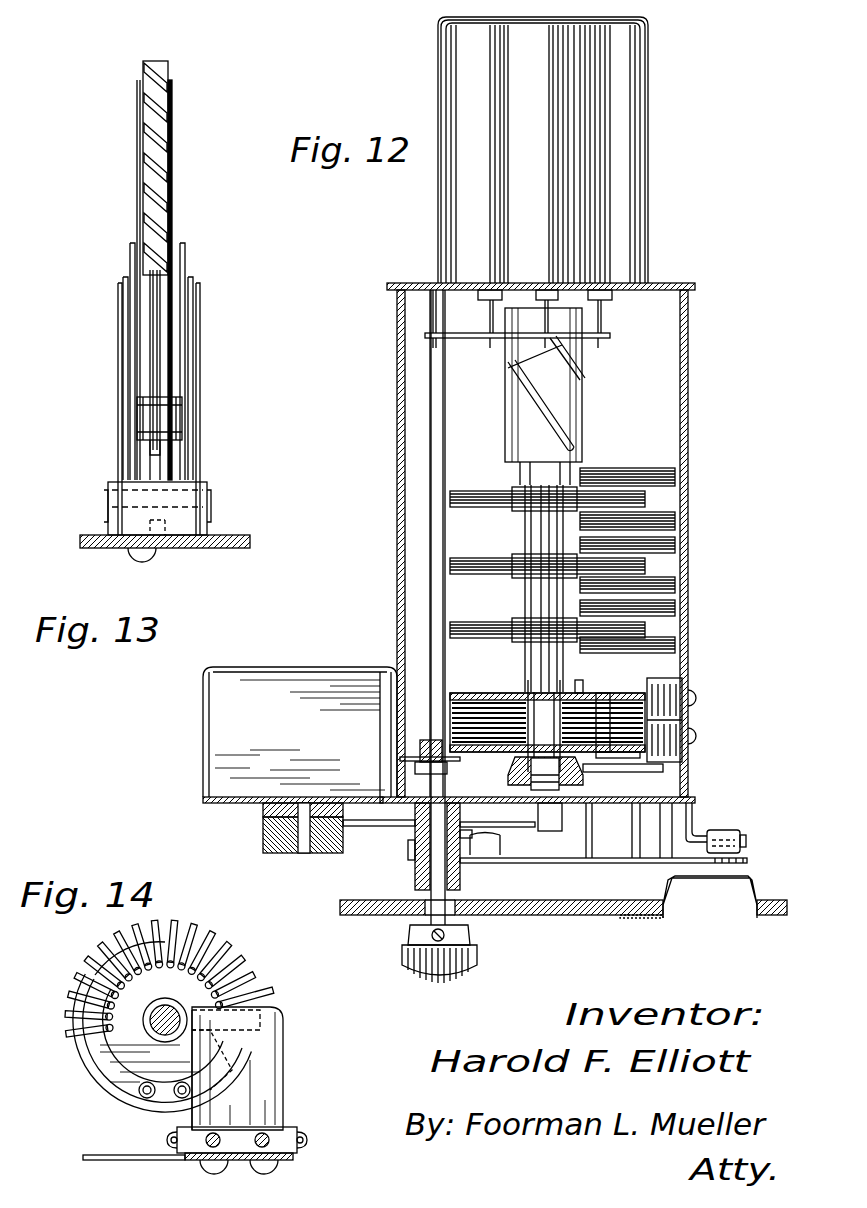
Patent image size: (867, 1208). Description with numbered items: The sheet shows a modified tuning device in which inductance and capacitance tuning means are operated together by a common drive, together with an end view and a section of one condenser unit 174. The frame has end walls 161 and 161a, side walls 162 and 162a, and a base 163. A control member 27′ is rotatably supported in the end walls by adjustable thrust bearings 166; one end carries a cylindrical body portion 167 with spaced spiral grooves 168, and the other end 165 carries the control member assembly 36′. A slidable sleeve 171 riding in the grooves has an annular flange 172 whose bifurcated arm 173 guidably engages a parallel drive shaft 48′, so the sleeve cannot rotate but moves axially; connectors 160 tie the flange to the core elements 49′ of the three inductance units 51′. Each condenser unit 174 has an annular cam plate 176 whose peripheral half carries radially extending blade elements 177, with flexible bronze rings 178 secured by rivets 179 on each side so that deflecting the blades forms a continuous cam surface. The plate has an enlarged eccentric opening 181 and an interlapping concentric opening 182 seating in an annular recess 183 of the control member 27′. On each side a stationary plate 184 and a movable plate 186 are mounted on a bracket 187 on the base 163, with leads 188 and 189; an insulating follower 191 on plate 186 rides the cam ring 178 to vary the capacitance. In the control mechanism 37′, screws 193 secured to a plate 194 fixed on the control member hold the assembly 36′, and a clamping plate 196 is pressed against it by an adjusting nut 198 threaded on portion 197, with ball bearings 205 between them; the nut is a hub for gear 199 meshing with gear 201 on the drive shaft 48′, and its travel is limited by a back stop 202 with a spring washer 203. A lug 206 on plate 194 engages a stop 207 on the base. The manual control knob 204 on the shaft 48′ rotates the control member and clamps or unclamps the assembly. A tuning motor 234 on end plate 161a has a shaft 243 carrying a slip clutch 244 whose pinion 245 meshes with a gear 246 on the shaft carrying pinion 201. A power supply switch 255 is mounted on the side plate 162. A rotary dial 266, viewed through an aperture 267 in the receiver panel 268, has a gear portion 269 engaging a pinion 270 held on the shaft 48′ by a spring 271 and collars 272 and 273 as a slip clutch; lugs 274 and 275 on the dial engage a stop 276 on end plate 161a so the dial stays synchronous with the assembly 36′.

In FIG. 12, the inductance units 51′ is at (448, 222).
In FIG. 12, the end wall 161 is at (665, 283).
In FIG. 12, the connectors 160 is at (612, 336).
In FIG. 12, the slidable sleeve 171 is at (503, 318).
In FIG. 12, the core elements 49′ is at (600, 300).
In FIG. 12, the bifurcated arm 173 is at (462, 338).
In FIG. 12, the cylindrical body portion 167 is at (510, 438).
In FIG. 12, the spiral grooves 168 is at (535, 400).
In FIG. 12, the annular flange 172 is at (506, 366).
In FIG. 12, the adjustable thrust bearings 166 is at (522, 290).
In FIG. 12, the drive shaft 48′ is at (430, 512).
In FIG. 12, the side wall 162a is at (405, 470).
In FIG. 12, the control member 27′ is at (528, 610).
In FIG. 14, the control member 27′ is at (152, 1038).
In FIG. 12, the condenser unit 174 is at (630, 470).
In FIG. 13, the condenser unit 174 is at (180, 222).
In FIG. 12, the bracket 187 is at (676, 528).
In FIG. 13, the bracket 187 is at (205, 484).
In FIG. 14, the bracket 187 is at (280, 1130).
In FIG. 12, the side wall 162 is at (690, 514).
In FIG. 12, the annular cam plate 176 is at (698, 638).
In FIG. 13, the annular cam plate 176 is at (158, 322).
In FIG. 14, the annular cam plate 176 is at (82, 1058).
In FIG. 12, the plate 194 is at (505, 692).
In FIG. 12, the control member assembly 36′ is at (470, 690).
In FIG. 12, the control mechanism 37′ is at (412, 700).
In FIG. 12, the threaded portion 197 is at (545, 758).
In FIG. 12, the stop 207 is at (590, 673).
In FIG. 12, the screws 193 is at (620, 690).
In FIG. 12, the lug 206 is at (590, 690).
In FIG. 12, the ball bearings 205 is at (621, 761).
In FIG. 12, the clamping plate 196 is at (495, 770).
In FIG. 12, the spring washer 203 is at (570, 778).
In FIG. 12, the adjusting nut 198 is at (620, 772).
In FIG. 12, the power supply switch 255 is at (705, 740).
In FIG. 12, the tuning motor 234 is at (183, 820).
In FIG. 12, the gear 199 is at (420, 748).
In FIG. 12, the gear 201 is at (418, 768).
In FIG. 12, the slip clutch 244 is at (266, 808).
In FIG. 12, the pinion 245 is at (266, 832).
In FIG. 12, the motor shaft 243 is at (303, 853).
In FIG. 12, the gear 246 is at (350, 826).
In FIG. 12, the pinion 270 is at (415, 865).
In FIG. 12, the spring 271 is at (408, 848).
In FIG. 12, the collar 273 is at (420, 897).
In FIG. 12, the collar 272 is at (497, 813).
In FIG. 12, the end of control member 165 is at (462, 800).
In FIG. 12, the lug portion 275 is at (450, 857).
In FIG. 12, the gear portion 269 is at (470, 865).
In FIG. 12, the rotary dial 266 is at (625, 866).
In FIG. 12, the back stop 202 is at (636, 830).
In FIG. 12, the end wall 161a is at (660, 833).
In FIG. 12, the stop portion 276 is at (692, 822).
In FIG. 12, the lug portion 274 is at (742, 838).
In FIG. 12, the panel 268 is at (598, 915).
In FIG. 12, the aperture 267 is at (705, 915).
In FIG. 12, the manual control knob 204 is at (470, 962).
In FIG. 13, the blade elements 177 is at (170, 118).
In FIG. 14, the blade elements 177 is at (193, 930).
In FIG. 13, the flexible bronze rings 178 is at (176, 168).
In FIG. 14, the flexible bronze rings 178 is at (78, 1000).
In FIG. 13, the insulating follower 191 is at (186, 252).
In FIG. 14, the insulating follower 191 is at (283, 1022).
In FIG. 13, the movable condenser plate 186 is at (193, 307).
In FIG. 14, the movable condenser plate 186 is at (268, 1012).
In FIG. 13, the stationary condenser plate 184 is at (200, 335).
In FIG. 14, the stationary condenser plate 184 is at (283, 1057).
In FIG. 13, the rivets 179 is at (183, 412).
In FIG. 14, the rivets 179 is at (146, 1098).
In FIG. 13, the base 163 is at (228, 535).
In FIG. 14, the base 163 is at (293, 1160).
In FIG. 14, the eccentric opening 181 is at (163, 1040).
In FIG. 14, the concentric opening 182 is at (163, 1005).
In FIG. 14, the annular recess 183 is at (197, 991).
In FIG. 14, the lead 188 is at (305, 1140).
In FIG. 14, the lead 189 is at (174, 1146).